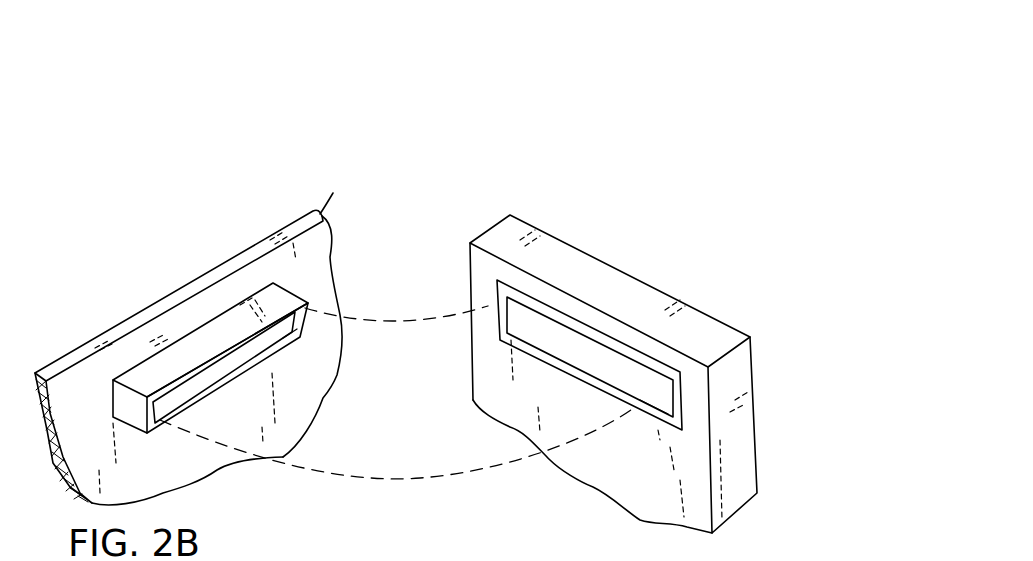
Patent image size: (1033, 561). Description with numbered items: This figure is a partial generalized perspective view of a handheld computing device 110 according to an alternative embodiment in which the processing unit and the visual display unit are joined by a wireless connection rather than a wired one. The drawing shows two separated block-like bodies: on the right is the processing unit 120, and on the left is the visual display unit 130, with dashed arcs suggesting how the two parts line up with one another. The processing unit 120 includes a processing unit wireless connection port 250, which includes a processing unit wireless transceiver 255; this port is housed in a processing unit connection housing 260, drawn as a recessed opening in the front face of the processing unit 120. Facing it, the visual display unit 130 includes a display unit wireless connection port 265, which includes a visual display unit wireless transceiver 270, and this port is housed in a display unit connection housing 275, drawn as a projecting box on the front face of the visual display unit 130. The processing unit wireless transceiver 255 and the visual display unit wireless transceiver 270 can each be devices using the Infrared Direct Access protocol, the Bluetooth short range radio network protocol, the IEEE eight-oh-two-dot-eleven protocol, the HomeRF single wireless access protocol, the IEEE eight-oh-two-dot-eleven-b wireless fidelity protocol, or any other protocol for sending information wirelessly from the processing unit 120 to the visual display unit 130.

The handheld computing device 110 is at (677, 342).
The processing unit 120 is at (750, 337).
The visual display unit 130 is at (333, 193).
The processing unit wireless connection port 250 is at (712, 368).
The processing unit wireless transceiver 255 is at (663, 398).
The processing unit connection housing 260 is at (688, 426).
The display unit wireless connection port 265 is at (302, 306).
The visual display unit wireless transceiver 270 is at (290, 348).
The display unit connection housing 275 is at (280, 352).